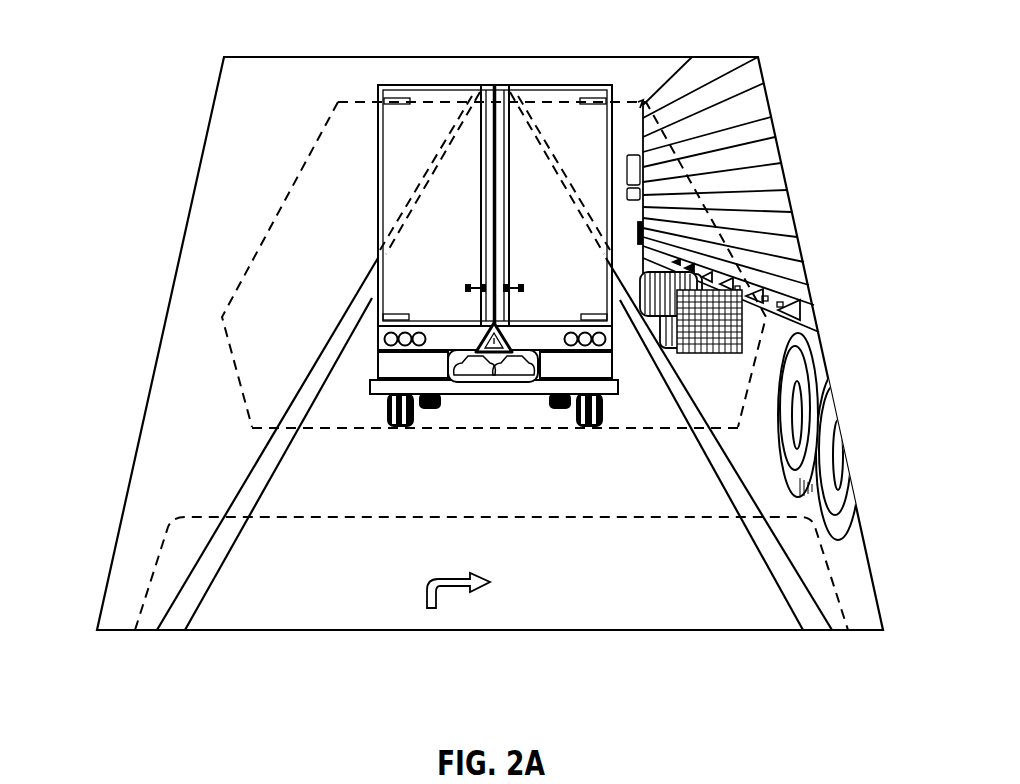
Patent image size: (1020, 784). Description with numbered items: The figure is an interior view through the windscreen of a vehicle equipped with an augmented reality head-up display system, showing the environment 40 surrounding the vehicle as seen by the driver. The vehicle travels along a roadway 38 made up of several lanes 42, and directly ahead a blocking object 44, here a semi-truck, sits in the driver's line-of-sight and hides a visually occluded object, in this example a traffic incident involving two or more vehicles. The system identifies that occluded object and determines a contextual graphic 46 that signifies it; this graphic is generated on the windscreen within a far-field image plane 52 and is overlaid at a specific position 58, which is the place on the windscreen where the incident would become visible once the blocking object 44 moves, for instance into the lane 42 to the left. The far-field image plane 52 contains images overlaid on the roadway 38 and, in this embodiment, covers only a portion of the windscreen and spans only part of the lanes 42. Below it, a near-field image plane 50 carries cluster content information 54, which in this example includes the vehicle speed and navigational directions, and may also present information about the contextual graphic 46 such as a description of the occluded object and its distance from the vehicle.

The roadway 38 is at (217, 474).
The environment 40 is at (781, 502).
The lane 42 is at (130, 583).
The blocking object 44 is at (566, 100).
The contextual graphic 46 is at (510, 338).
The near-field image plane 50 is at (168, 530).
The far-field image plane 52 is at (222, 317).
The cluster content information 54 is at (586, 564).
The position 58 is at (484, 390).